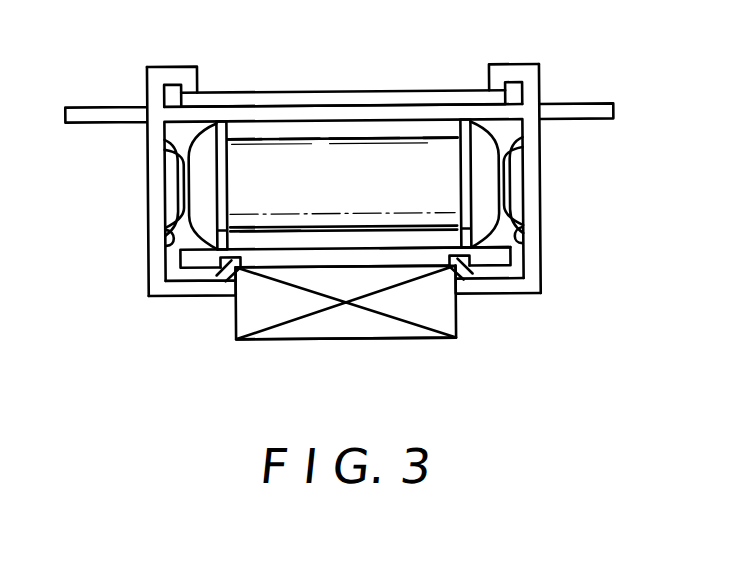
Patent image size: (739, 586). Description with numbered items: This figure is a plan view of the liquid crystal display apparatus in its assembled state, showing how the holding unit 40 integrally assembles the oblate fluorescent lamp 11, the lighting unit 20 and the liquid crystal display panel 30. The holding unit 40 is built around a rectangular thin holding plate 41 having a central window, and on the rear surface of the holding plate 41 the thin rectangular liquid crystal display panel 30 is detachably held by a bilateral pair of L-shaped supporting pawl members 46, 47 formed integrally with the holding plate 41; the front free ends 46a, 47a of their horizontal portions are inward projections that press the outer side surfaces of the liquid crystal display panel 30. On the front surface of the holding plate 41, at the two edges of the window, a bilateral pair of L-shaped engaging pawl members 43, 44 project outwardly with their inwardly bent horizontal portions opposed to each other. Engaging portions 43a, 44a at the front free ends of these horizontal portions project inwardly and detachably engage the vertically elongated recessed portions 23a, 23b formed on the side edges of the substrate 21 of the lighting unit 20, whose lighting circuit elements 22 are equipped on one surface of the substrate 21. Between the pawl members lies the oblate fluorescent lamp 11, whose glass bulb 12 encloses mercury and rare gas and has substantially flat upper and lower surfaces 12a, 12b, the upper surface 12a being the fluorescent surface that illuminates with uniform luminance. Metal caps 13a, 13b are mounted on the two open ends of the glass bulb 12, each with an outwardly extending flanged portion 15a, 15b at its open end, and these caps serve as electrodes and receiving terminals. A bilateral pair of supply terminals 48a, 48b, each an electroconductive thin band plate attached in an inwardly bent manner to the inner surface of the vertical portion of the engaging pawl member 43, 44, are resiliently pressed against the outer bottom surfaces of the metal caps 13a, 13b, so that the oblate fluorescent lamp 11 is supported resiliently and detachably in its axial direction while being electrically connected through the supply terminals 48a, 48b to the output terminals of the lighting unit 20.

The holding unit 40 is at (110, 107).
The supporting pawl member 46 is at (157, 67).
The front free end 46a is at (187, 77).
The supporting pawl member 47 is at (532, 73).
The front free end 47a is at (498, 73).
The holding plate 41 is at (377, 113).
The engaging pawl member 43 is at (152, 173).
The engaging pawl member 44 is at (533, 160).
The engaging portion 43a is at (229, 290).
The engaging portion 44a is at (467, 293).
The supply terminal 48a is at (166, 243).
The supply terminal 48b is at (527, 240).
The metal cap 13a is at (202, 165).
The metal cap 13b is at (482, 157).
The liquid crystal display panel 30 is at (362, 98).
The oblate fluorescent lamp 11 is at (299, 139).
The glass bulb 12 is at (265, 222).
The upper surface 12a is at (333, 142).
The lower surface 12b is at (322, 262).
The flanged portion 15a is at (232, 152).
The flanged portion 15b is at (456, 168).
The lighting unit 20 is at (374, 342).
The substrate 21 is at (417, 260).
The lighting circuit elements 22 is at (307, 330).
The recessed portion 23a is at (214, 272).
The recessed portion 23b is at (481, 270).